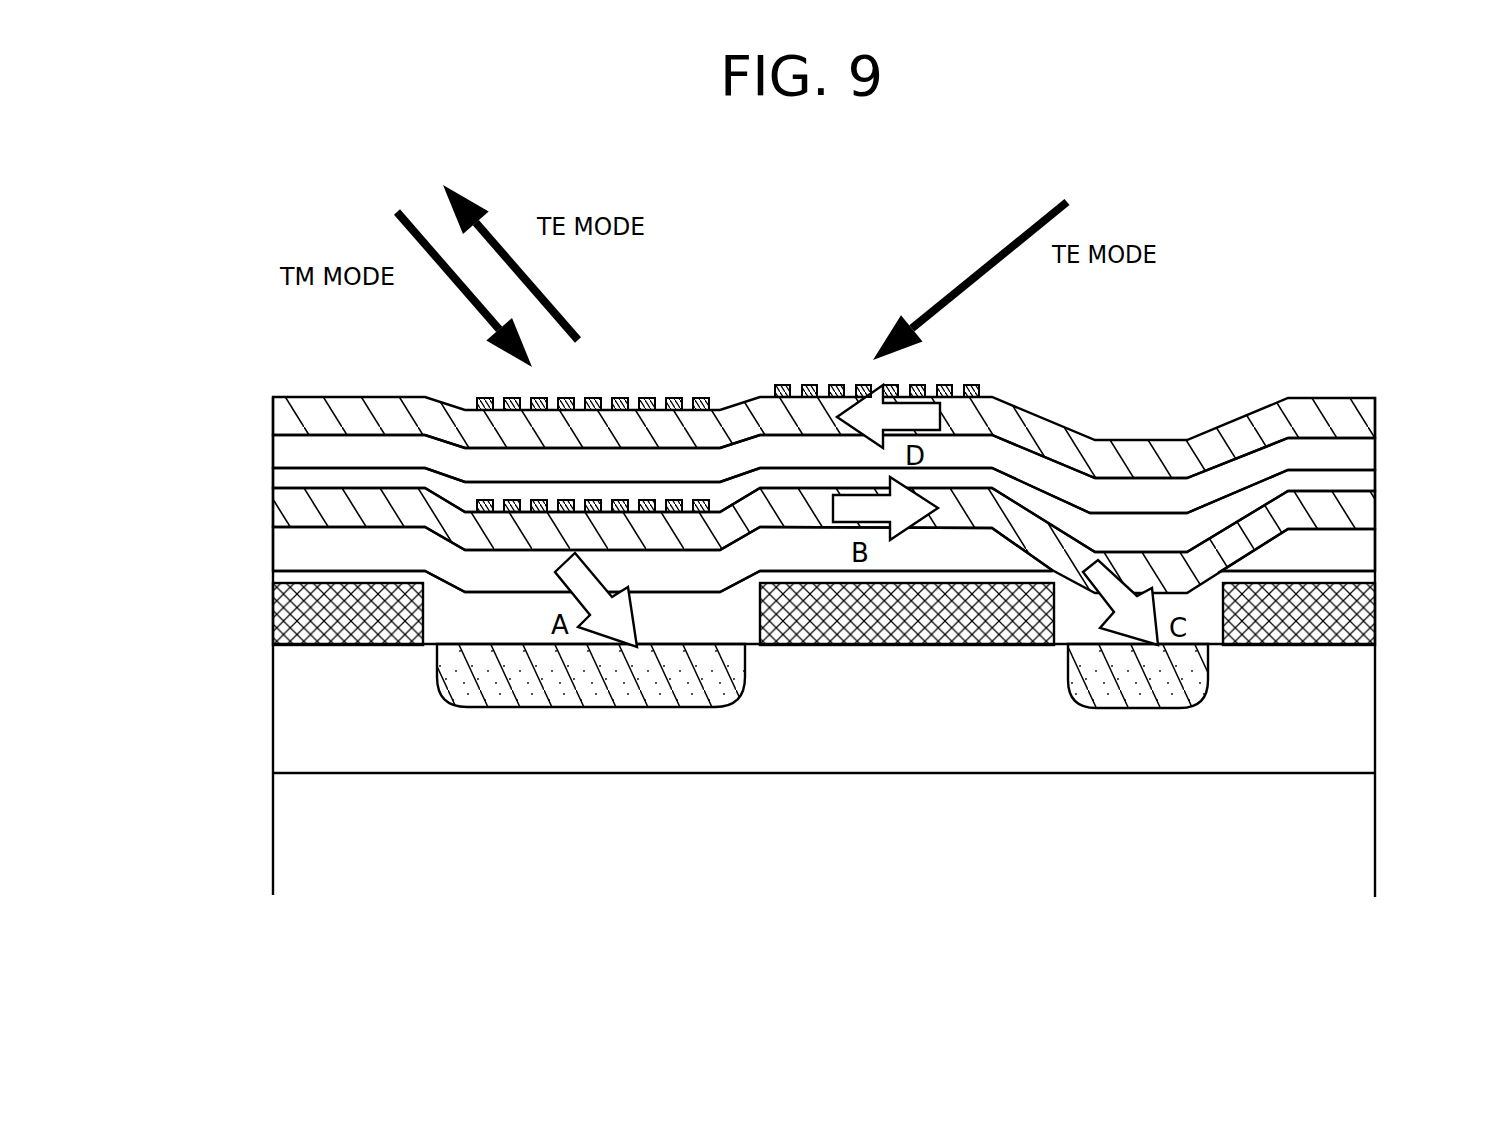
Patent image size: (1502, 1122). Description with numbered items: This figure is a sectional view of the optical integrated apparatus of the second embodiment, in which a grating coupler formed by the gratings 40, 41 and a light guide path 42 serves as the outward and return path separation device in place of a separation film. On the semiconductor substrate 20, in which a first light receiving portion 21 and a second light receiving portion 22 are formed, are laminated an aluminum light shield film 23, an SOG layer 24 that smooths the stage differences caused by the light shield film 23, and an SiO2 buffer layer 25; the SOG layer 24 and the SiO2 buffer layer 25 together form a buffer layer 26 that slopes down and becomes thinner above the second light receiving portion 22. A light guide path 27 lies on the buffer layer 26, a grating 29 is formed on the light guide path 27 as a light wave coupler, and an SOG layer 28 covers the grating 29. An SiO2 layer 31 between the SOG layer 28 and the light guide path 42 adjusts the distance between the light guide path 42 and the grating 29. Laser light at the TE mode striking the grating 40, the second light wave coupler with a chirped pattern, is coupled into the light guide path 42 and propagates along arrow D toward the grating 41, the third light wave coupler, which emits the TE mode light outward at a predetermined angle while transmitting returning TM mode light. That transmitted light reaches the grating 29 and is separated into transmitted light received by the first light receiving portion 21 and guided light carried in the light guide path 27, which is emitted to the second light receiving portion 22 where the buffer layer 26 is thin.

The semiconductor substrate 20 is at (1378, 647).
The first light receiving portion 21 is at (462, 683).
The second light receiving portion 22 is at (1183, 687).
The aluminum light shield film 23 is at (1378, 622).
The SOG layer 24 is at (285, 575).
The SiO2 buffer layer 25 is at (285, 537).
The buffer layer 26 is at (759, 556).
The light guide path 27 is at (1366, 512).
The SOG layer 28 is at (1366, 480).
The grating 29 is at (675, 500).
The SiO2 layer 31 is at (1366, 447).
The grating 40 is at (972, 383).
The grating 41 is at (647, 400).
The light guide path 42 is at (285, 407).